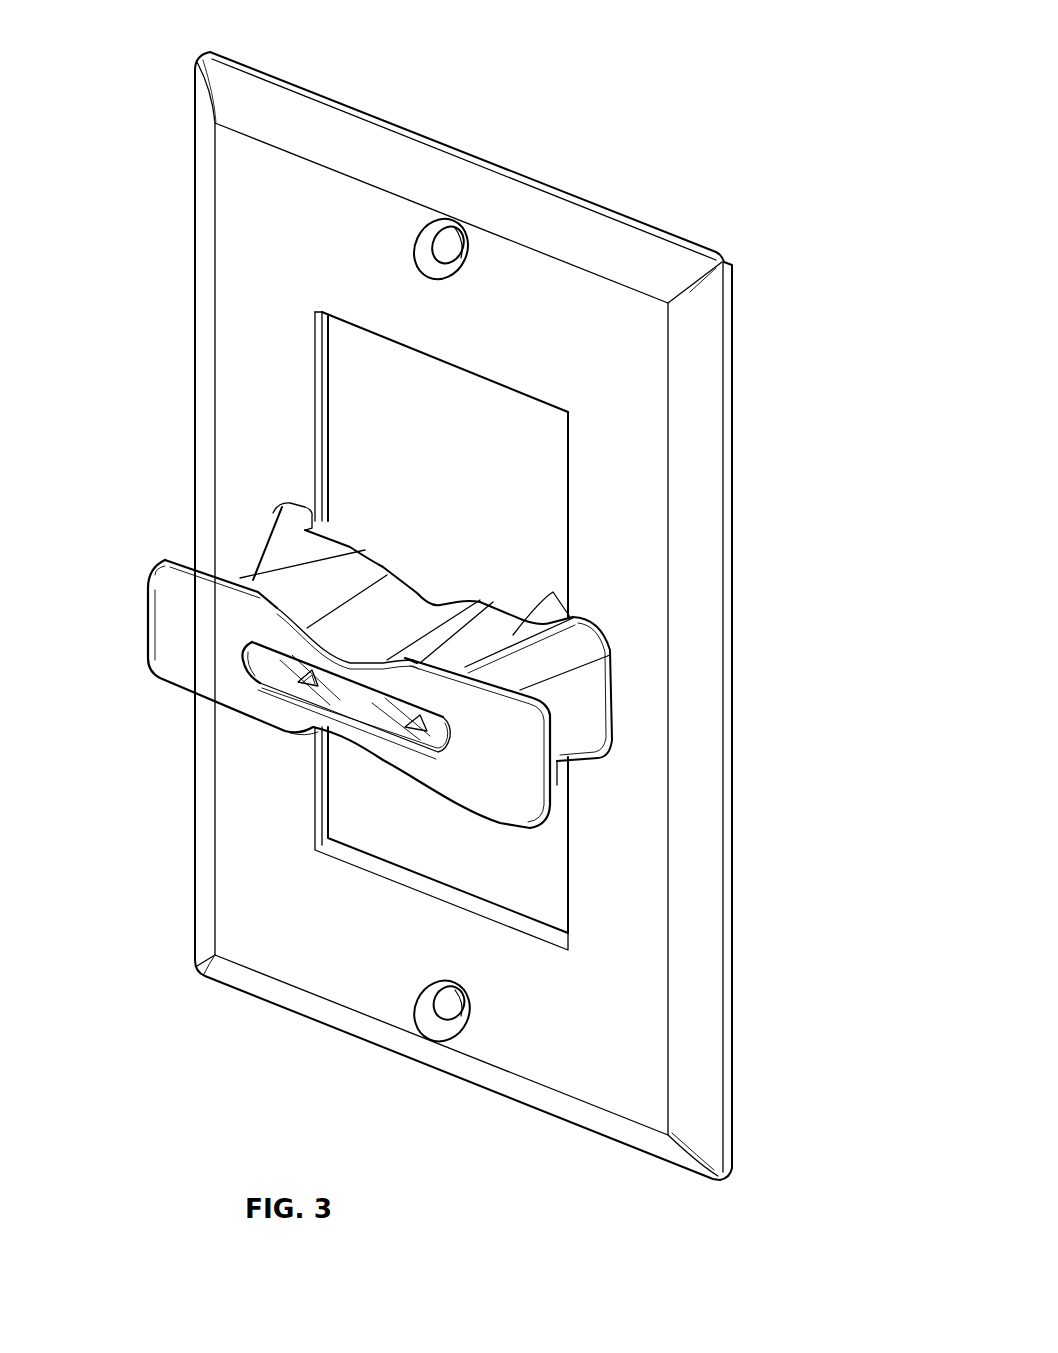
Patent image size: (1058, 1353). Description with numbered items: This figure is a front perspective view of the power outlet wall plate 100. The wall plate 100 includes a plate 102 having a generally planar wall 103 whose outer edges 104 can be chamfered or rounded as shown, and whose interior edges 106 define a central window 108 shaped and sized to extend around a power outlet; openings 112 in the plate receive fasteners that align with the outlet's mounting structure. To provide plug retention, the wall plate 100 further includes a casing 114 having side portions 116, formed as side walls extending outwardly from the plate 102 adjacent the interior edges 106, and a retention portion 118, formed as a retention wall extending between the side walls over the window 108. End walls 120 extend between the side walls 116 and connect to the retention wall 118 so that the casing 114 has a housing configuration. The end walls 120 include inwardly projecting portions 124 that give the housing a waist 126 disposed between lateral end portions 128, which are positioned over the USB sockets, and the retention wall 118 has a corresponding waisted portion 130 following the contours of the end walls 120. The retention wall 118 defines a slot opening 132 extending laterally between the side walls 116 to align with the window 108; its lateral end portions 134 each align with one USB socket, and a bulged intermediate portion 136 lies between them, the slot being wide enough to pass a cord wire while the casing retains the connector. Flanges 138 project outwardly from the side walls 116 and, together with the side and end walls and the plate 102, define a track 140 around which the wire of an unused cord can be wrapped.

The power outlet wall plate 100 is at (806, 118).
The plate 102 is at (560, 293).
The generally planar wall 103 is at (613, 355).
The outer edges 104 is at (727, 392).
The interior edges 106 is at (352, 316).
The central window 108 is at (363, 401).
The openings 112 is at (440, 222).
The casing 114 is at (160, 676).
The side portions 116 is at (583, 692).
The retention portion 118 is at (187, 587).
The end walls 120 is at (510, 635).
The inwardly projecting portions 124 is at (383, 600).
The waist 126 is at (407, 627).
The lateral end portions 128 is at (215, 678).
The waisted portion 130 is at (340, 740).
The slot opening 132 is at (273, 700).
The lateral end portions 134 is at (262, 645).
The bulged intermediate portion 136 is at (335, 663).
The flanges 138 is at (163, 597).
The track 140 is at (584, 732).